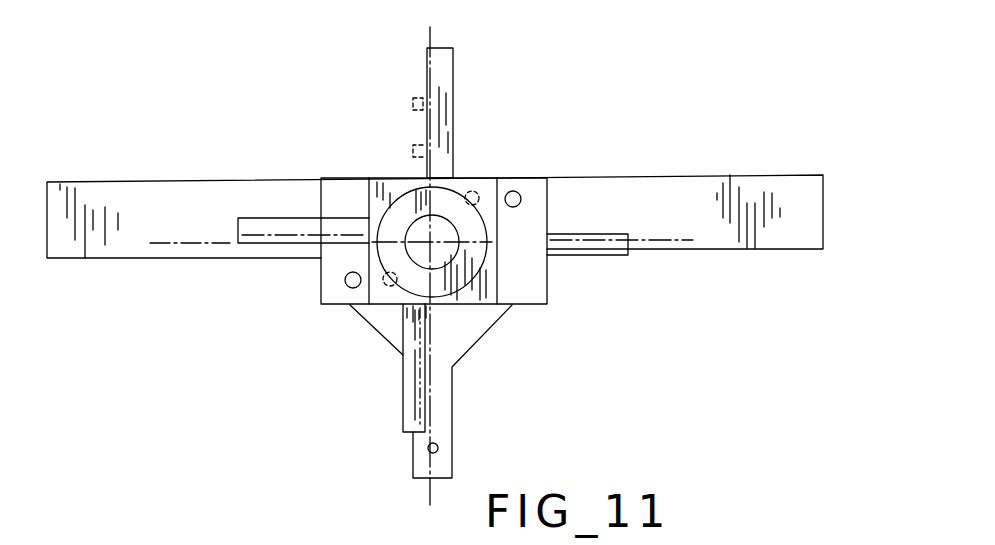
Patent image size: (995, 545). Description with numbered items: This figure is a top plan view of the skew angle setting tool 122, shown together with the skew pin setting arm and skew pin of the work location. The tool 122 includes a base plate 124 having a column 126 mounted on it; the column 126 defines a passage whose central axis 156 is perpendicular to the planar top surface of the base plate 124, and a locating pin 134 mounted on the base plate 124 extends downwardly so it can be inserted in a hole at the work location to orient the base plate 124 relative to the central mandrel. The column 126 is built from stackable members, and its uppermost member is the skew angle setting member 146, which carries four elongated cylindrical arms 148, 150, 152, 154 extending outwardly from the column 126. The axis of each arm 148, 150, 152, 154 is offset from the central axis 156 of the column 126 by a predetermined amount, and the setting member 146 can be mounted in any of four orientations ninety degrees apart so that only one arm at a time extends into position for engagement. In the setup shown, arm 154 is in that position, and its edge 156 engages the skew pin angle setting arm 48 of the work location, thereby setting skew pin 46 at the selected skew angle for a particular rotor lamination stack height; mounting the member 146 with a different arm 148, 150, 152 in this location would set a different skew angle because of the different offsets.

The skew angle setting tool 122 is at (700, 385).
The base plate 124 is at (760, 249).
The column 126 is at (503, 281).
The locating pin 134 is at (440, 449).
The skew angle setting member 146 is at (468, 306).
The elongated cylindrical arm 148 is at (612, 255).
The elongated cylindrical arm 150 is at (403, 388).
The elongated cylindrical arm 152 is at (280, 218).
The elongated cylindrical arm 154 is at (453, 73).
The central axis 156 is at (427, 63).
The skew pin 46 is at (415, 149).
The skew pin angle setting arm 48 is at (413, 100).